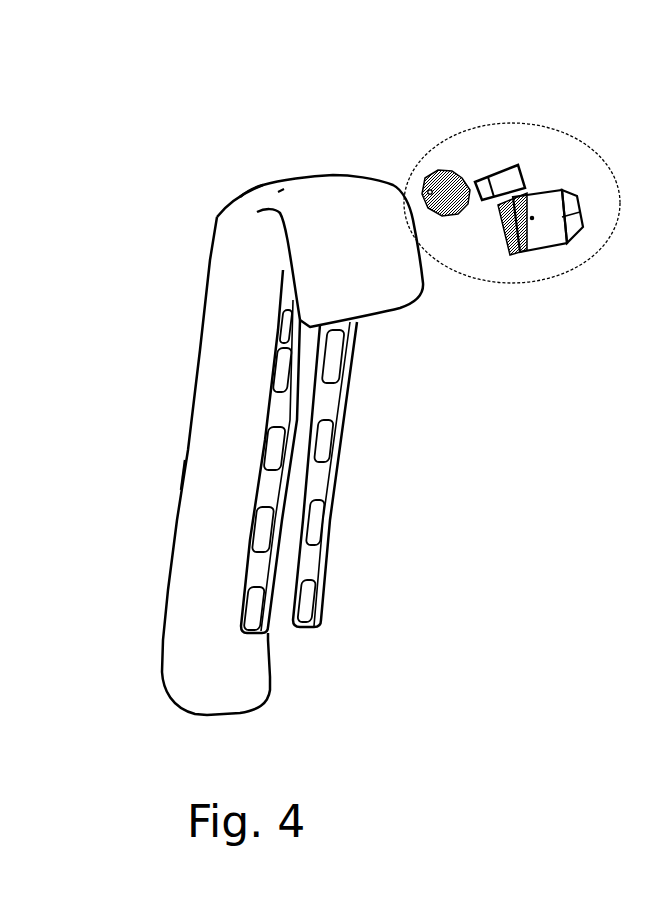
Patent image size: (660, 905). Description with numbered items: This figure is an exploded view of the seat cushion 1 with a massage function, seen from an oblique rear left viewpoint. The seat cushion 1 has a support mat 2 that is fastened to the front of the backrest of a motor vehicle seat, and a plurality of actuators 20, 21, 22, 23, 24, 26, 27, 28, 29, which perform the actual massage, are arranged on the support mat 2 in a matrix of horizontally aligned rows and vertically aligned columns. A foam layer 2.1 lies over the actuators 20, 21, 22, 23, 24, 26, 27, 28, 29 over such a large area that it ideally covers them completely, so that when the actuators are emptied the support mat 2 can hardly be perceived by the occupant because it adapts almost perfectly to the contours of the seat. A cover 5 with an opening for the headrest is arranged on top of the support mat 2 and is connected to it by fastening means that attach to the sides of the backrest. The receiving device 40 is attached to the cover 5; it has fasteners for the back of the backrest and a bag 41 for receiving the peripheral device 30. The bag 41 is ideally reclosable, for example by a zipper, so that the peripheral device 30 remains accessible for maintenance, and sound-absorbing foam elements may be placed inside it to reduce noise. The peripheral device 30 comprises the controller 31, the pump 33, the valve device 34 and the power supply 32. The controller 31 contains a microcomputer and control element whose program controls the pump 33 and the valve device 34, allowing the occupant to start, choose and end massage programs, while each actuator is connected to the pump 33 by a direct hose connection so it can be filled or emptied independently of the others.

The seat cushion 1 is at (243, 379).
The support mat 2 is at (187, 388).
The foam layer 2.1 is at (182, 475).
The cover 5 is at (248, 205).
The actuator 20 is at (283, 292).
The actuator 21 is at (273, 372).
The actuator 22 is at (271, 455).
The actuator 23 is at (257, 533).
The actuator 24 is at (254, 618).
The actuator 26 is at (333, 367).
The actuator 27 is at (326, 447).
The actuator 28 is at (313, 527).
The actuator 29 is at (302, 605).
The peripheral device 30 is at (550, 130).
The controller 31 is at (440, 170).
The power supply 32 is at (570, 165).
The pump 33 is at (550, 240).
The valve device 34 is at (535, 225).
The receiving device 40 is at (365, 163).
The bag 41 is at (312, 264).